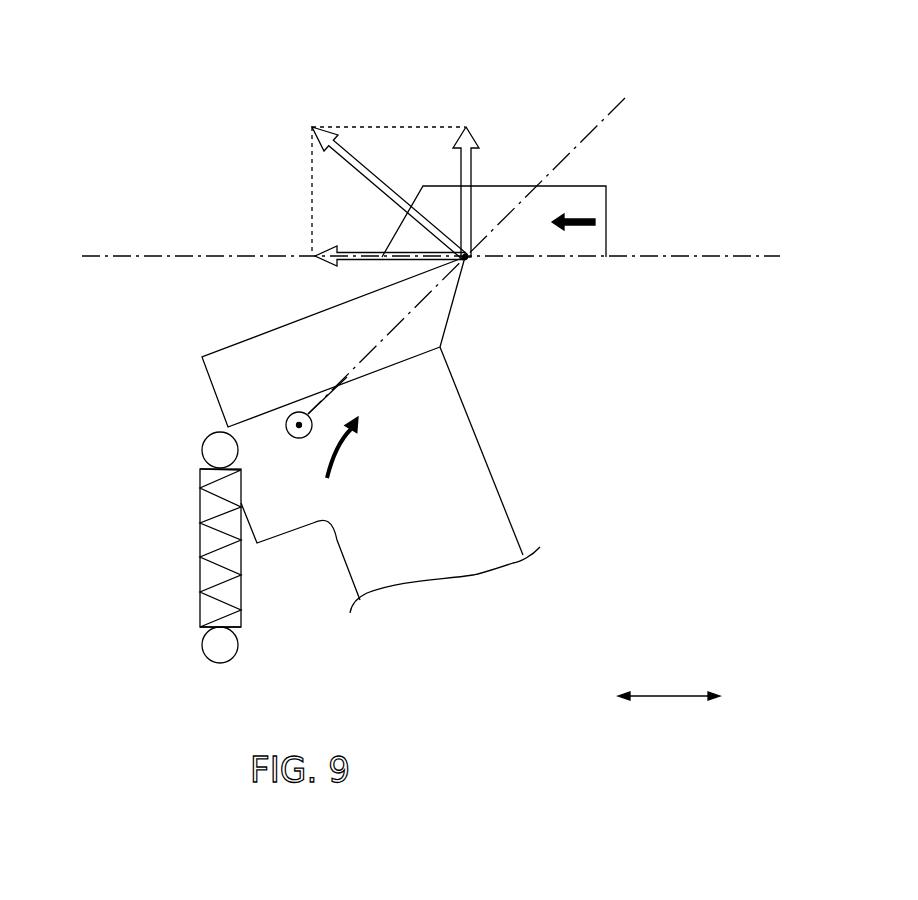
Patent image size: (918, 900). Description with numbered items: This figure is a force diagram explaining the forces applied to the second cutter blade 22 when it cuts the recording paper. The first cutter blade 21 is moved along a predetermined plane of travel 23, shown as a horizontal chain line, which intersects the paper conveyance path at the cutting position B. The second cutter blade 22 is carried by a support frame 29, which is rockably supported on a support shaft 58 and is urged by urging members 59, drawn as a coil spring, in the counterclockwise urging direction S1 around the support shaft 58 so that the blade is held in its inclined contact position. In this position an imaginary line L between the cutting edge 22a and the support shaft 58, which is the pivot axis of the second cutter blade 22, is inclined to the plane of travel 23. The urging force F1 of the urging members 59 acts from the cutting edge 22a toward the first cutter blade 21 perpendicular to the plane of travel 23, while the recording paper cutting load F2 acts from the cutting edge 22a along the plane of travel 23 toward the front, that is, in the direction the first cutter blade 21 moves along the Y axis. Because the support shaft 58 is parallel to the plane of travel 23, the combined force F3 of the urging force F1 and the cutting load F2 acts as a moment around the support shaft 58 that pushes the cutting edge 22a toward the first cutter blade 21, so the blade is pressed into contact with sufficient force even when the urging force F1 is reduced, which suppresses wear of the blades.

The first cutter blade 21 is at (497, 183).
The second cutter blade 22 is at (277, 333).
The cutting edge 22a is at (468, 262).
The plane of travel 23 is at (128, 253).
The support frame 29 is at (478, 507).
The support shaft 58 is at (306, 437).
The urging members 59 is at (207, 547).
The cutting position B is at (490, 264).
The imaginary line L is at (607, 113).
The urging force F1 is at (472, 162).
The recording paper cutting load F2 is at (353, 263).
The combined force F3 is at (368, 163).
The urging direction S1 is at (353, 458).
The Y axis Y is at (666, 698).